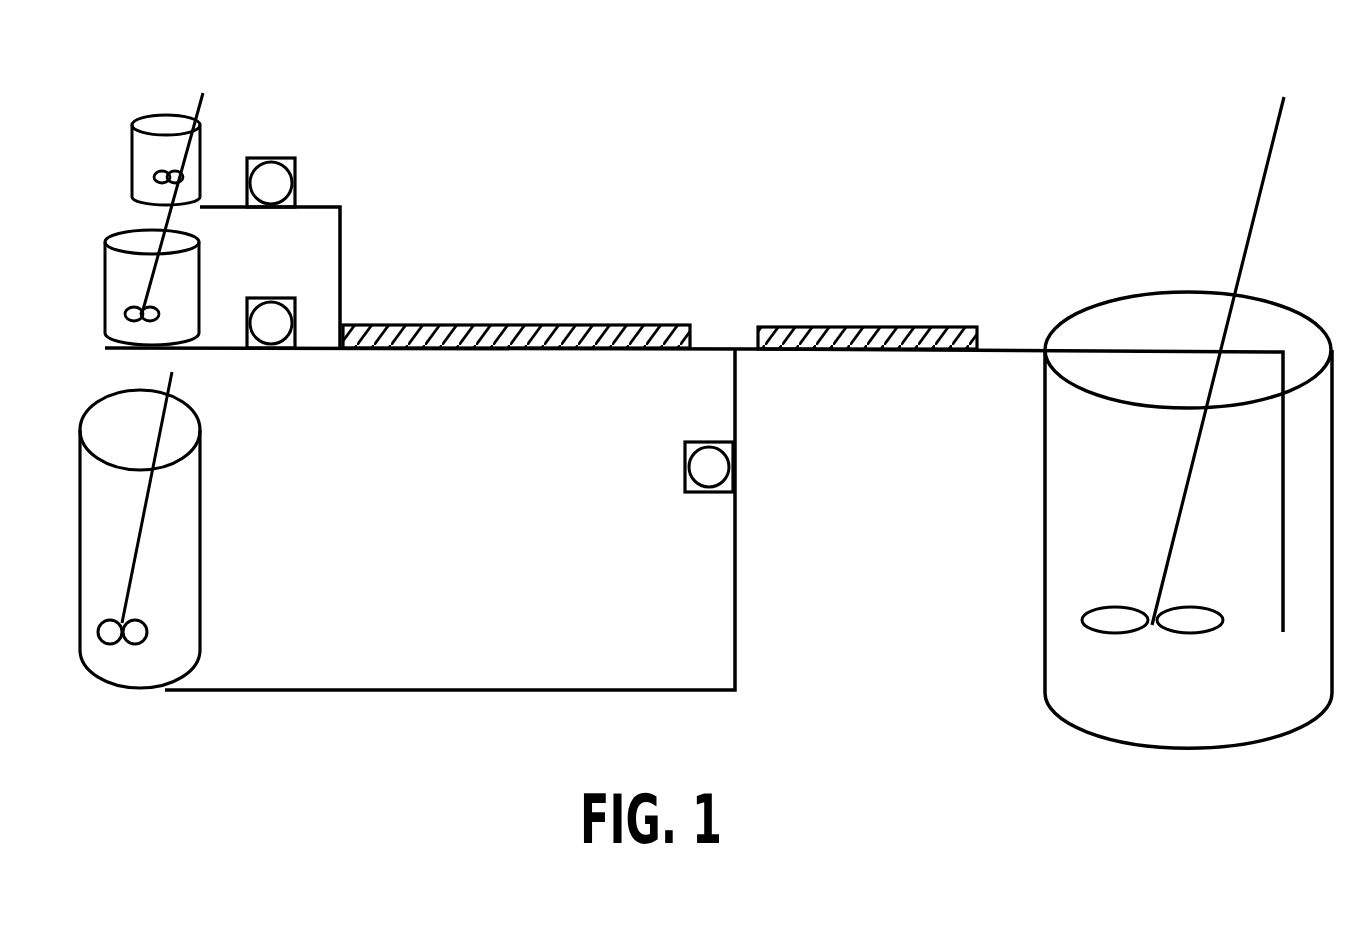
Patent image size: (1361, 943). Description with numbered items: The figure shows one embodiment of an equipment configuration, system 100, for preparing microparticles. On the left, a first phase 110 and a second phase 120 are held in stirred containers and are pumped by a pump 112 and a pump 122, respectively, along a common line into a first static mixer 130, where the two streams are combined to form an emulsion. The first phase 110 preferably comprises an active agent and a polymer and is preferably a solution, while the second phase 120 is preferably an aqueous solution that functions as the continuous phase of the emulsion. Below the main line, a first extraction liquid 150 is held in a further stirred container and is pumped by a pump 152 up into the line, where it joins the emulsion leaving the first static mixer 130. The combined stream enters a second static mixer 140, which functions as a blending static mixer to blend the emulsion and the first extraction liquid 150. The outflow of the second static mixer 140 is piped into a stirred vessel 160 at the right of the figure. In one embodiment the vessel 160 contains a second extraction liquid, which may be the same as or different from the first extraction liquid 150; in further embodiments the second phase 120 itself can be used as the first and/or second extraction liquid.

The system 100 is at (812, 103).
The first phase 110 is at (142, 152).
The pump 112 is at (290, 157).
The second phase 120 is at (112, 296).
The pump 122 is at (290, 297).
The first static mixer 130 is at (503, 323).
The second static mixer 140 is at (888, 353).
The first extraction liquid 150 is at (93, 513).
The pump 152 is at (687, 448).
The vessel 160 is at (1302, 342).